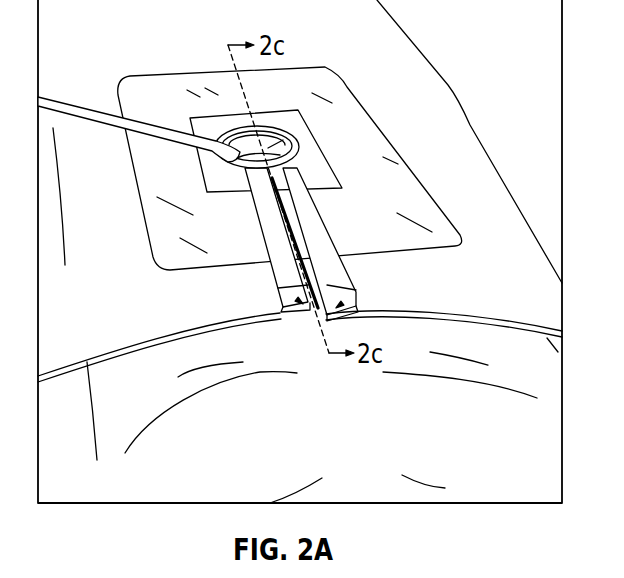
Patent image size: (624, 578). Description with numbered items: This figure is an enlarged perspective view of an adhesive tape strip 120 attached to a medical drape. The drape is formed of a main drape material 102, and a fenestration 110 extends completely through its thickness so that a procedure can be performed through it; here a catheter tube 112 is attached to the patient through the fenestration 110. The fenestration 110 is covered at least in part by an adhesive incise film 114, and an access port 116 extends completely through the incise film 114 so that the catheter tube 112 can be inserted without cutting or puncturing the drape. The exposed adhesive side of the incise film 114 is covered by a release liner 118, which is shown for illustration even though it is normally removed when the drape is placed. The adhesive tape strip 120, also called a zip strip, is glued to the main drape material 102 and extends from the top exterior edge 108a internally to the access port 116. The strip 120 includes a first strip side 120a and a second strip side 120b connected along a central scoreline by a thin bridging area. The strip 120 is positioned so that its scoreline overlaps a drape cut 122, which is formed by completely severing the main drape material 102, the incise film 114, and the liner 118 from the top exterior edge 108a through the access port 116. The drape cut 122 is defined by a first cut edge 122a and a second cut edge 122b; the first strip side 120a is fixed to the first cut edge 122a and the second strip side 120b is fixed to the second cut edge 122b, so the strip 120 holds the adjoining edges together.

The main drape material 102 is at (468, 168).
The top exterior edge 108a is at (460, 327).
The fenestration 110 is at (350, 118).
The catheter tube 112 is at (110, 118).
The adhesive incise film 114 is at (385, 156).
The access port 116 is at (243, 136).
The release liner 118 is at (288, 118).
The adhesive tape strip 120 is at (310, 241).
The first strip side 120a is at (288, 277).
The second strip side 120b is at (332, 278).
The drape cut 122 is at (336, 360).
The first cut edge 122a is at (300, 318).
The second cut edge 122b is at (340, 313).